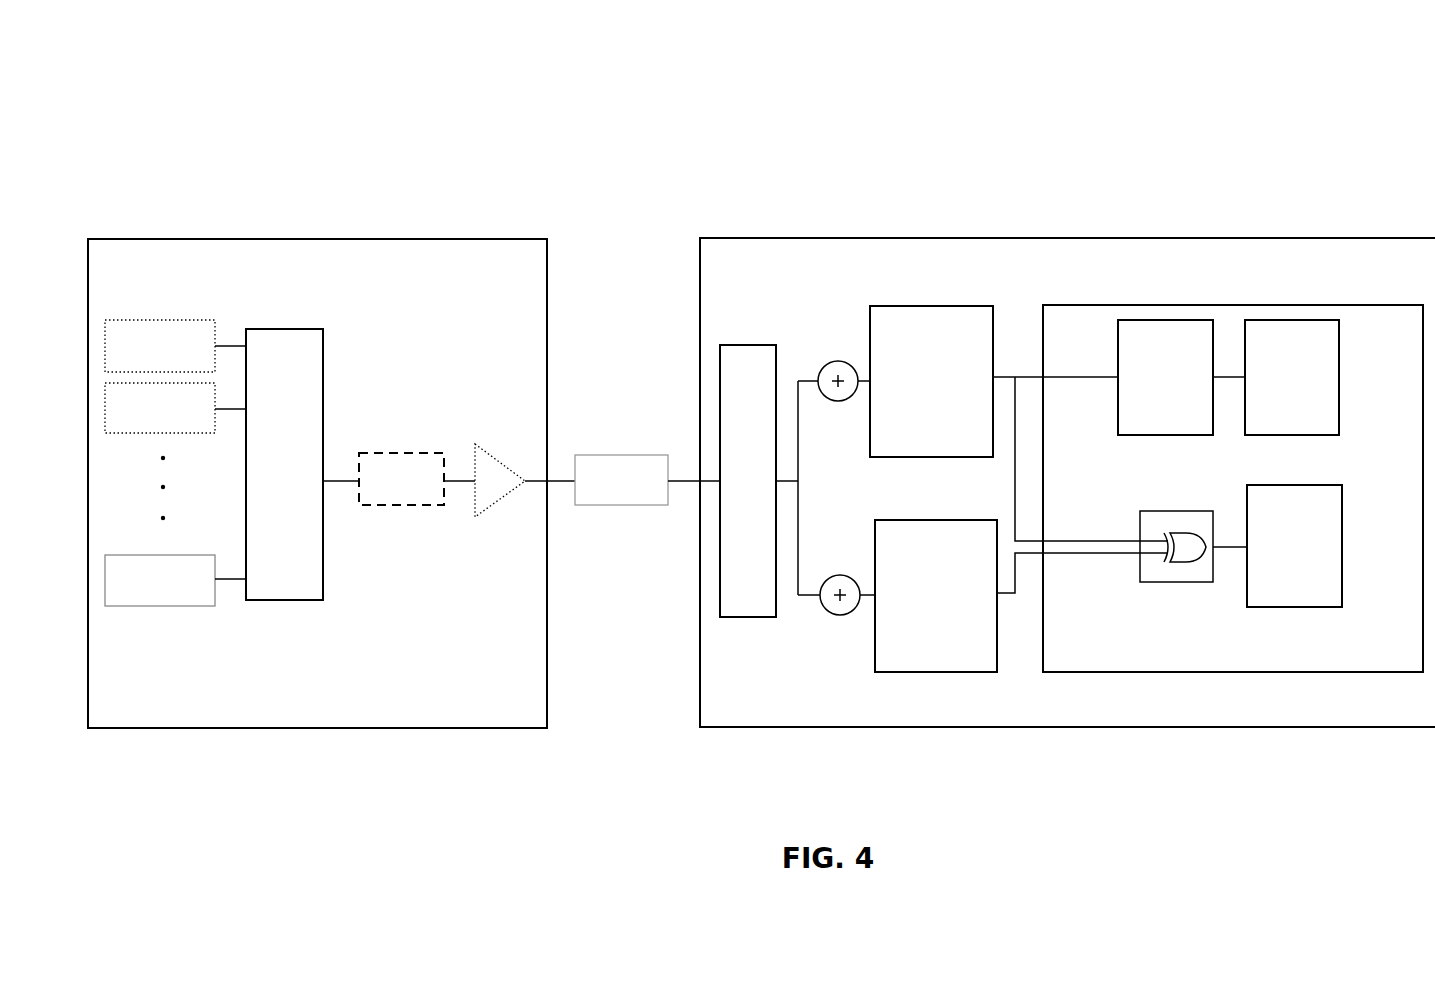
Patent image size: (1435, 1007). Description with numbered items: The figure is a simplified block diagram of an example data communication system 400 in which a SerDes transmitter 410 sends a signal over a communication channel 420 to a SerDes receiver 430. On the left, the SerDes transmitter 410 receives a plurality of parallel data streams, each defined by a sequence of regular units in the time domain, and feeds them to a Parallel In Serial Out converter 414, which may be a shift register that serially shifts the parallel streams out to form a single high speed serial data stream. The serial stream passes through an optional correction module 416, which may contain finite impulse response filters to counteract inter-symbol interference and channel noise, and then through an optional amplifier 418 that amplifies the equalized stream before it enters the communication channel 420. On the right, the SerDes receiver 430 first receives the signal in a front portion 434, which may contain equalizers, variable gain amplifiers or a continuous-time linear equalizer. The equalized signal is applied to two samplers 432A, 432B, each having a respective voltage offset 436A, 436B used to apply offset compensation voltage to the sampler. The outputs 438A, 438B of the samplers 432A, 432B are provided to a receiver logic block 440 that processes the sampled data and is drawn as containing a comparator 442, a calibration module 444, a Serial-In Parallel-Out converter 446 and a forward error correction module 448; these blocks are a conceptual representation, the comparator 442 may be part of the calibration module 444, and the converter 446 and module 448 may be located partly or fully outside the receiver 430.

The data communication system 400 is at (251, 78).
The SerDes transmitter 410 is at (542, 294).
The Parallel In Serial Out (PISO) converter 414 is at (265, 479).
The correction module 416 is at (382, 494).
The amplifier 418 is at (490, 453).
The communication channel 420 is at (598, 492).
The SerDes receiver 430 is at (1377, 279).
The sampler 432A is at (963, 393).
The sampler 432B is at (968, 609).
The front portion 434 is at (730, 492).
The voltage offset 436A is at (838, 361).
The voltage offset 436B is at (840, 615).
The output 438A is at (997, 375).
The output 438B is at (997, 600).
The receiver logic block 440 is at (1410, 349).
The comparator 442 is at (1195, 582).
The calibration module 444 is at (1272, 560).
The Serial-In Parallel-Out (SIPO) converter 446 is at (1142, 391).
The forward error correction (FEC) module 448 is at (1269, 391).